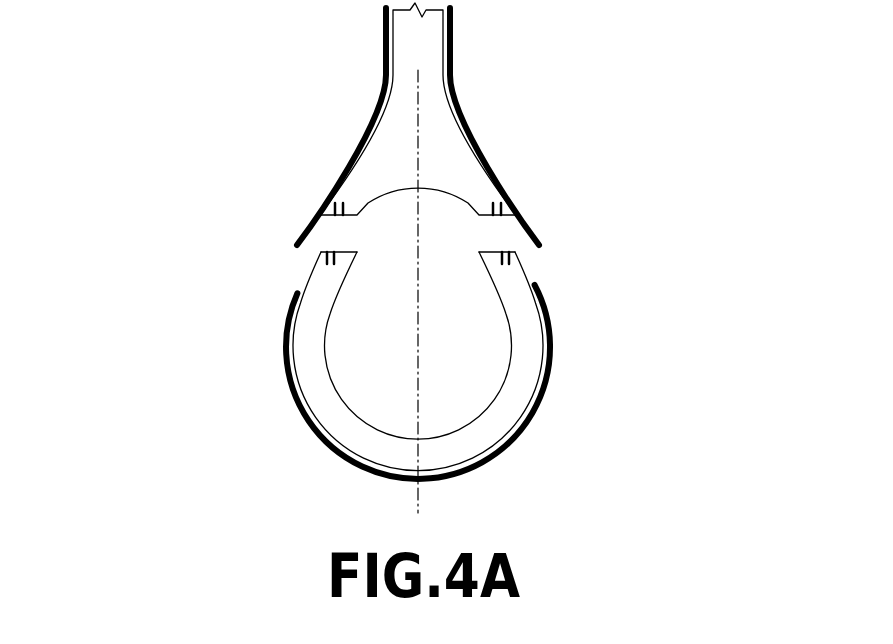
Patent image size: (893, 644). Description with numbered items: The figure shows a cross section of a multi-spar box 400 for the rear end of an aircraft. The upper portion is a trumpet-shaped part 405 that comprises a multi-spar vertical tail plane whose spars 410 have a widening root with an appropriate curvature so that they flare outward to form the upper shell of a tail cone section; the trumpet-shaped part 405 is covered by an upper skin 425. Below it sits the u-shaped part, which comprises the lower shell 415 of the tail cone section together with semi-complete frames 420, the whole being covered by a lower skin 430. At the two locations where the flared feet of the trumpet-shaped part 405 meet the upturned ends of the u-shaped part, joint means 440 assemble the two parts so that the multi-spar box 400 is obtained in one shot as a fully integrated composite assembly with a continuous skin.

The multi-spar box 400 is at (162, 155).
The trumpet-shaped part 405 is at (538, 185).
The spars 410 is at (445, 150).
The lower shell 415 is at (565, 358).
The semi-complete frames 420 is at (503, 410).
The upper skin 425 is at (318, 204).
The lower skin 430 is at (298, 412).
The joint means 440 is at (518, 253).